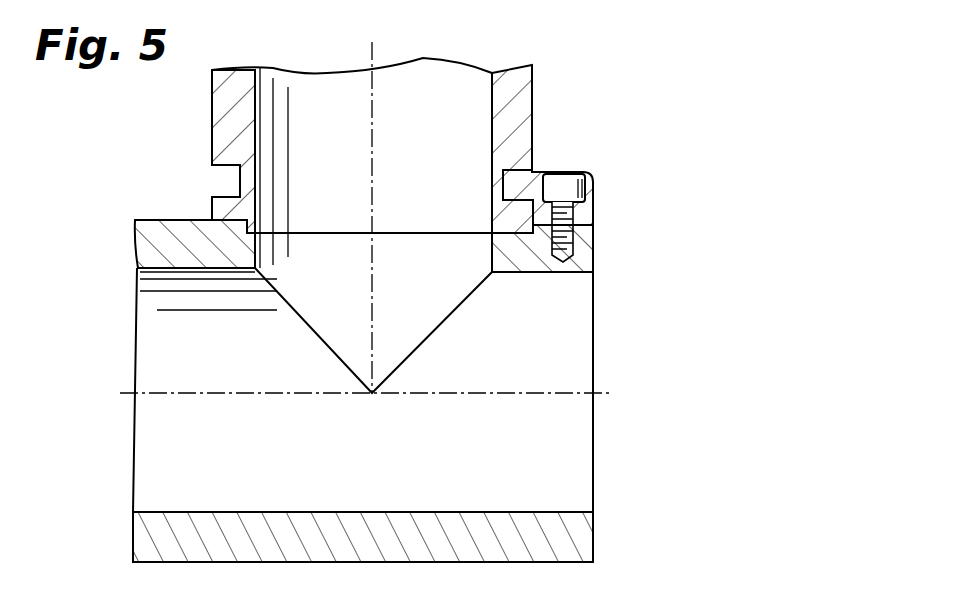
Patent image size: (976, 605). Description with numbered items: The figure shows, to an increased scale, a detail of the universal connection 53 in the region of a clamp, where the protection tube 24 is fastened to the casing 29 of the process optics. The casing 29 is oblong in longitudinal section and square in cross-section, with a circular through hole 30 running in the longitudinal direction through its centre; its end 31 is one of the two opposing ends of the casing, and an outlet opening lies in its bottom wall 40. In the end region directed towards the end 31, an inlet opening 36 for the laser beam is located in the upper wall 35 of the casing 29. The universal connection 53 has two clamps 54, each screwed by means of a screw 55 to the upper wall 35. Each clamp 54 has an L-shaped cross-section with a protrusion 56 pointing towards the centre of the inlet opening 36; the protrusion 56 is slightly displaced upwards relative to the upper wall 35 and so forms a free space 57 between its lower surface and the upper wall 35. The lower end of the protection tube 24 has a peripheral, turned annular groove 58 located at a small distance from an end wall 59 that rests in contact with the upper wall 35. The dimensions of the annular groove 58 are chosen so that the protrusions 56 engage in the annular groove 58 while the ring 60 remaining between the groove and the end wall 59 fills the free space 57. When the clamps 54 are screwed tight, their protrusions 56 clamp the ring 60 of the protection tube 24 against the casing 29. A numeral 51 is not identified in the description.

The protection tube 24 is at (520, 98).
The casing 29 is at (582, 537).
The through hole 30 is at (563, 368).
The end of casing 31 is at (593, 445).
The upper wall 35 is at (163, 217).
The inlet opening 36 is at (450, 262).
The bottom wall 40 is at (178, 562).
The lower element 51 is at (294, 601).
The universal connection 53 is at (590, 334).
The clamp 54 is at (596, 214).
The screw 55 is at (600, 196).
The protrusion 56 is at (502, 178).
The free space 57 is at (568, 187).
The annular groove 58 is at (240, 183).
The end wall 59 is at (220, 207).
The ring 60 is at (220, 207).